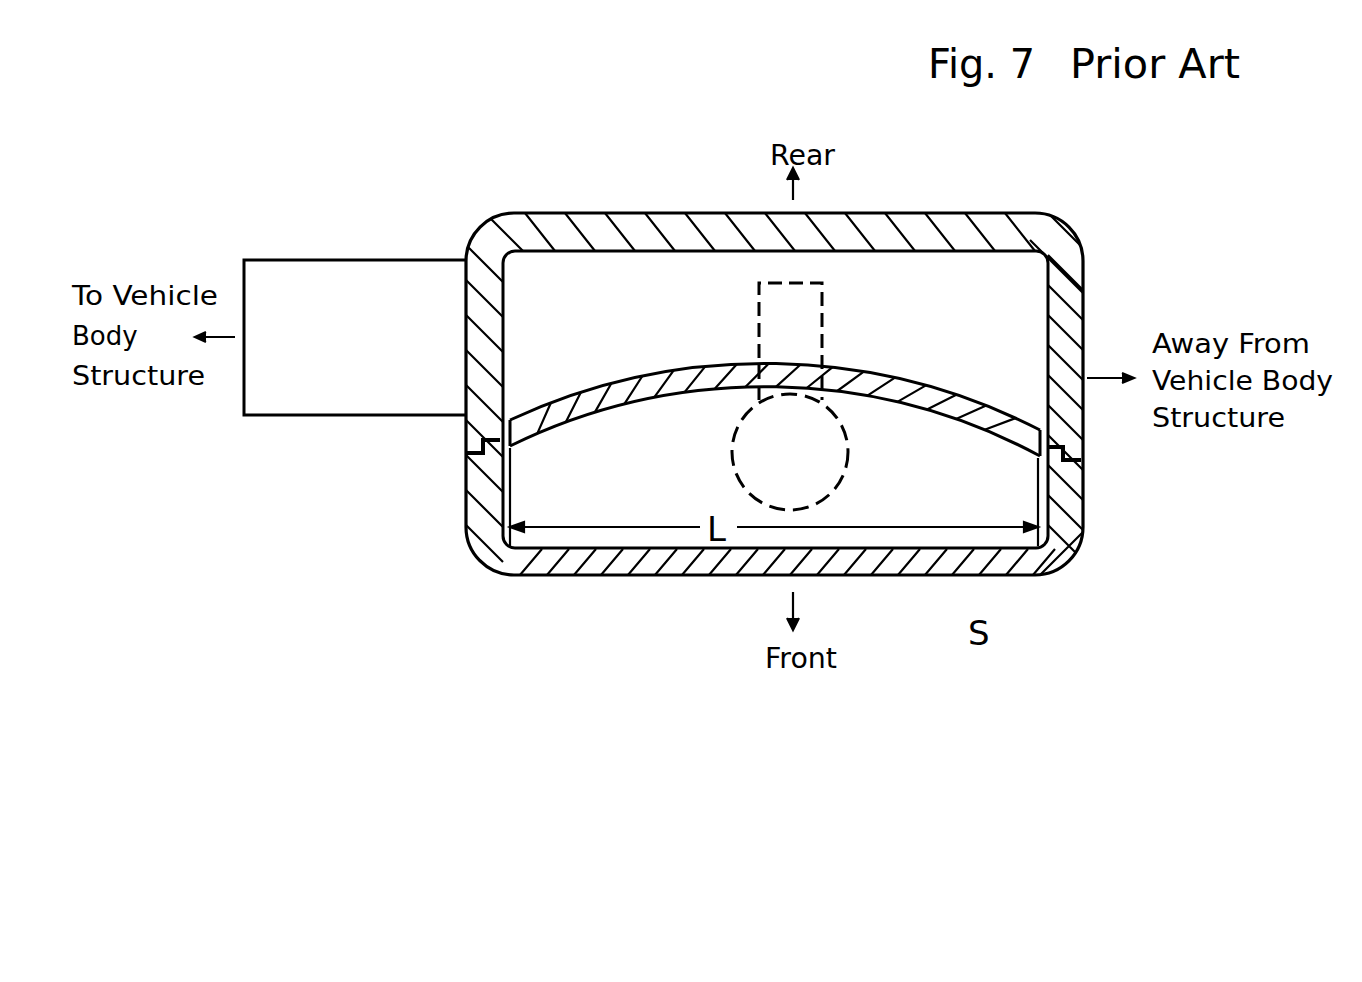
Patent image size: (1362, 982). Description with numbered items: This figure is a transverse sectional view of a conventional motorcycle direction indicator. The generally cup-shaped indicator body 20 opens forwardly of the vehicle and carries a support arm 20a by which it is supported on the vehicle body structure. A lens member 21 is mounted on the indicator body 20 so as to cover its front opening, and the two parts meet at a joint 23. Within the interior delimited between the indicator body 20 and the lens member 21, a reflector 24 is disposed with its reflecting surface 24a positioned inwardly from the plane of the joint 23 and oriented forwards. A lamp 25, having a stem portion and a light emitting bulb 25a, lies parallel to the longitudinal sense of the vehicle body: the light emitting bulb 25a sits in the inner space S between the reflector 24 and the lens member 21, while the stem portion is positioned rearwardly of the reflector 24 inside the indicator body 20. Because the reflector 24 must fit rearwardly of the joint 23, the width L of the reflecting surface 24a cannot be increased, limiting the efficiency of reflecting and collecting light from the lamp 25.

The indicator body 20 is at (1065, 262).
The support arm 20a is at (362, 282).
The lens member 21 is at (1072, 517).
The joint 23 is at (469, 455).
The reflector 24 is at (978, 397).
The reflecting surface 24a is at (965, 608).
The lamp 25 is at (752, 325).
The light emitting bulb 25a is at (732, 466).